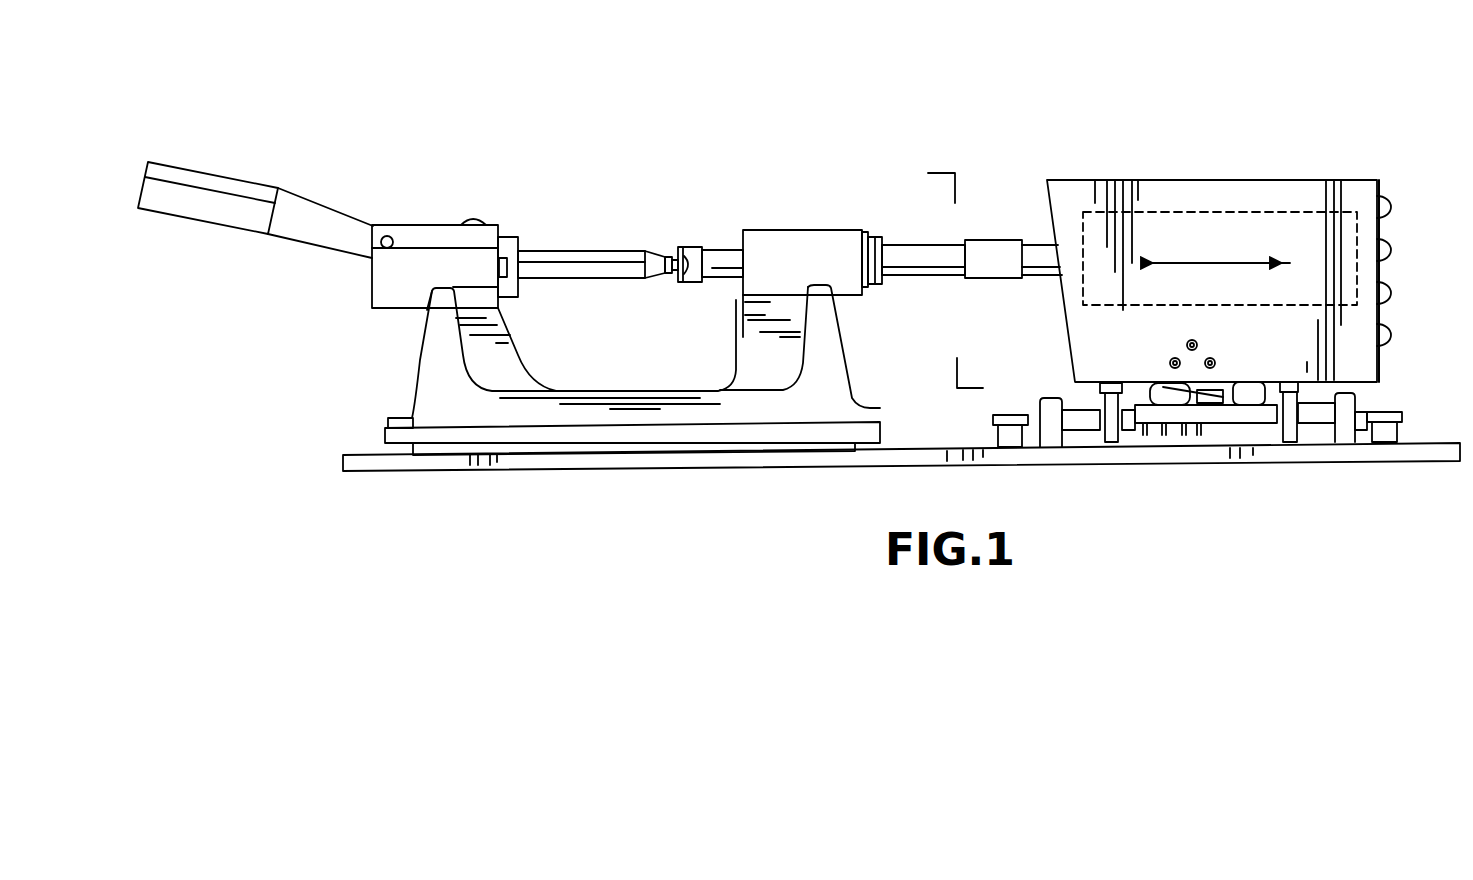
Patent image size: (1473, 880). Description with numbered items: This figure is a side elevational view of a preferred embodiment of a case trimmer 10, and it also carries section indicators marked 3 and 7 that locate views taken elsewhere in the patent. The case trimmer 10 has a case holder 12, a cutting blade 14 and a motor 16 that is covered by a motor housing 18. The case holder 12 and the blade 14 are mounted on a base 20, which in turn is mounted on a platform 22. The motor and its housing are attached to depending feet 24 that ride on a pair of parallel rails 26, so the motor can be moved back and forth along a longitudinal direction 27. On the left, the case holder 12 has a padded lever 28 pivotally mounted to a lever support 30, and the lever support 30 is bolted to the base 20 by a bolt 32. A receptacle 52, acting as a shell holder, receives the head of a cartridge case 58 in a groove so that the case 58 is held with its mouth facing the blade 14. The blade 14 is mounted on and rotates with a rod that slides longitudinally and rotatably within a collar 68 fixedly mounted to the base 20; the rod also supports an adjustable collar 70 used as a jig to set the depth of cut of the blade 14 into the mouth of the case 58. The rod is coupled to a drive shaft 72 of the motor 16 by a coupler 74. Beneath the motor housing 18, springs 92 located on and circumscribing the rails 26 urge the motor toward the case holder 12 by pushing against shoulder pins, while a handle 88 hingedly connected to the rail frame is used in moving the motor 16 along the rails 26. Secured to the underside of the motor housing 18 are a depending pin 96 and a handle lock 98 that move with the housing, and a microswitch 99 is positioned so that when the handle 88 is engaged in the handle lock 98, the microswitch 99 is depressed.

The case trimmer 10 is at (853, 151).
The case holder 12 is at (445, 155).
The cutting blade 14 is at (696, 246).
The motor 16 is at (1160, 210).
The motor housing 18 is at (1298, 180).
The base 20 is at (417, 377).
The platform 22 is at (945, 466).
The depending feet 24 is at (1112, 444).
The rails 26 is at (1077, 445).
The longitudinal direction 27 is at (1217, 263).
The padded lever 28 is at (325, 213).
The lever support 30 is at (412, 223).
The bolt 32 is at (472, 218).
The receptacle 52 is at (520, 236).
The cartridge case 58 is at (610, 279).
The collar 68 is at (792, 230).
The adjustable collar 70 is at (860, 297).
The drive shaft 72 is at (1033, 279).
The coupler 74 is at (995, 240).
The handle 88 is at (1165, 385).
The springs 92 is at (1163, 436).
The depending pin 96 is at (1217, 404).
The handle lock 98 is at (1197, 389).
The microswitch 99 is at (1238, 406).
The section line 3- 3 is at (358, 268).
The section line 7- 7 is at (615, 216).